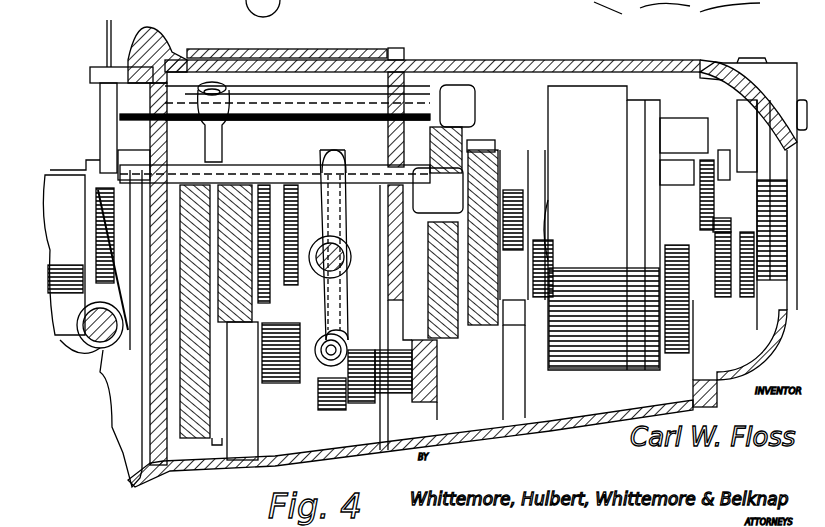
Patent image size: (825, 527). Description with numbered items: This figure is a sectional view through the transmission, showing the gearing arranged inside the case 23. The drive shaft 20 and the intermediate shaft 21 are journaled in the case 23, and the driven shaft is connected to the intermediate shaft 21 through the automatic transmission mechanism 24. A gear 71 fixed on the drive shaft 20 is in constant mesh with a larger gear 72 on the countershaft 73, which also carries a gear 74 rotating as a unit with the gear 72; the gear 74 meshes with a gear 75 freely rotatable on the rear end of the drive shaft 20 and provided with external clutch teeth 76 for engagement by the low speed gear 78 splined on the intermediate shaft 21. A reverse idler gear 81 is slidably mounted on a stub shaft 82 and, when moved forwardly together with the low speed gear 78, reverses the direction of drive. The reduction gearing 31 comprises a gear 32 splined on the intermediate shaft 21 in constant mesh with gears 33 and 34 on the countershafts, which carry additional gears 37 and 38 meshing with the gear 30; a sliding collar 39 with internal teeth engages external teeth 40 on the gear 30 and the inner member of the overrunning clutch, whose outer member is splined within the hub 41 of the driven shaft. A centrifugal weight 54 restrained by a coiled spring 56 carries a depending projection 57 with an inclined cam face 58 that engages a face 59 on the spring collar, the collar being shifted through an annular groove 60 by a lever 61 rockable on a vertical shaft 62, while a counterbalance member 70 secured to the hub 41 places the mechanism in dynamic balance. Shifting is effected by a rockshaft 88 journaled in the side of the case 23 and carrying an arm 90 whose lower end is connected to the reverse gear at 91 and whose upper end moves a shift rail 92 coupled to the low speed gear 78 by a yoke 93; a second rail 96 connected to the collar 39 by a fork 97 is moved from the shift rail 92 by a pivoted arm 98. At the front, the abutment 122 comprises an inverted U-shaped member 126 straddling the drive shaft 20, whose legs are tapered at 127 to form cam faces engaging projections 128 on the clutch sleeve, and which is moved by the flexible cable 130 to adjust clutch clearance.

The drive shaft 20 is at (60, 170).
The intermediate shaft 21 is at (355, 254).
The case 23 is at (495, 60).
The automatic transmission mechanism 24 is at (592, 86).
The gear 30 is at (490, 172).
The reduction gearing 31 is at (438, 122).
The gear 32 is at (436, 184).
The gear 33 is at (458, 338).
The gear 34 is at (455, 135).
The gear 37 is at (488, 325).
The gear 38 is at (470, 160).
The collar 39 is at (525, 300).
The external teeth 40 is at (510, 194).
The hub 41 is at (565, 88).
The centrifugal weight 54 is at (683, 128).
The coiled spring 56 is at (724, 190).
The depending projection 57 is at (706, 166).
The inclined cam face 58 is at (702, 194).
The face 59 is at (720, 298).
The annular groove 60 is at (750, 298).
The lever 61 is at (748, 141).
The vertical shaft 62 is at (767, 61).
The counterbalance member 70 is at (672, 355).
The gear 71 is at (200, 190).
The gear 72 is at (195, 462).
The countershaft 73 is at (132, 375).
The gear 74 is at (215, 428).
The gear 75 is at (246, 190).
The external clutch teeth 76 is at (264, 300).
The low speed gear 78 is at (306, 315).
The reverse idler gear 81 is at (362, 403).
The stub shaft 82 is at (290, 385).
The rockshaft 88 is at (340, 215).
The arm 90 is at (338, 302).
The connection 91 is at (312, 386).
The shift rail 92 is at (283, 168).
The yoke 93 is at (342, 172).
The second rail 96 is at (300, 108).
The fork 97 is at (465, 150).
The arm 98 is at (240, 108).
The abutment 122 is at (92, 158).
The inverted U-shaped member 126 is at (50, 238).
The tapered cam faces 127 is at (78, 318).
The projections 128 is at (80, 300).
The flexible cable 130 is at (111, 30).